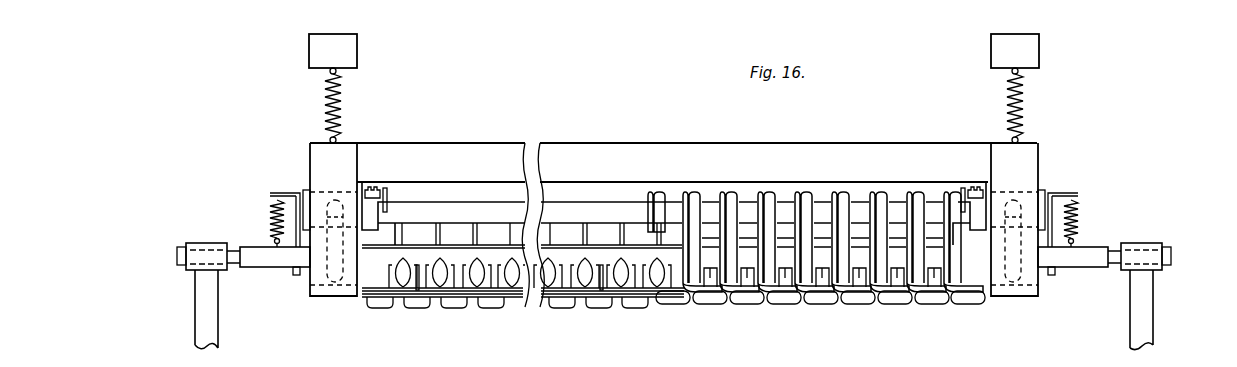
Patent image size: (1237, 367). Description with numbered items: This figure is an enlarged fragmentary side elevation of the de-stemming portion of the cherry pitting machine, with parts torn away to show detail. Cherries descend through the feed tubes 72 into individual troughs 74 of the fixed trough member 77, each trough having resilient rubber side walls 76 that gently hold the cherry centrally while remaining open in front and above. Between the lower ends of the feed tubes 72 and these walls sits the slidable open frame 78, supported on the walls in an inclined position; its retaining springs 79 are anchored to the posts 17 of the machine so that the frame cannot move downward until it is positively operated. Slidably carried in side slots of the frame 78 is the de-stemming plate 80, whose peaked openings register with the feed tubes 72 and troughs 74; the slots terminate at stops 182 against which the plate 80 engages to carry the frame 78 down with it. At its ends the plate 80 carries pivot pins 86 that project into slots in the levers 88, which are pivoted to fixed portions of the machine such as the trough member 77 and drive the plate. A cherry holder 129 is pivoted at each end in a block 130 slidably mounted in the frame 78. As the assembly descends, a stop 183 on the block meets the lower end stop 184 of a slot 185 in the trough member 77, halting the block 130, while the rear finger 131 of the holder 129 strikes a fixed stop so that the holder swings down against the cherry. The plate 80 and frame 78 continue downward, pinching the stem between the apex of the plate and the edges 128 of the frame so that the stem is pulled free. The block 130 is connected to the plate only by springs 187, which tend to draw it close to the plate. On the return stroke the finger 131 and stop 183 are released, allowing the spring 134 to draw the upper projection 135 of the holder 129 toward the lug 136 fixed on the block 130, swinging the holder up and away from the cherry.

The posts 17 is at (348, 51).
The feed tubes 72 is at (762, 192).
The troughs 74 is at (838, 300).
The resilient rubber side walls 76 is at (776, 293).
The trough member 77 is at (511, 282).
The slidable open frame 78 is at (608, 152).
The retaining springs 79 is at (342, 100).
The de-stemming plate 80 is at (272, 258).
The pivot pins 86 is at (177, 258).
The levers 88 is at (212, 330).
The edges 128 is at (478, 289).
The holder 129 is at (482, 205).
The block 130 is at (305, 190).
The rear finger 131 is at (437, 266).
The spring 134 is at (376, 195).
The upper projection 135 is at (388, 200).
The lug 136 is at (364, 192).
The stops 182 is at (350, 292).
The stop 183 is at (1038, 192).
The lower end stop 184 is at (345, 283).
The slot 185 is at (326, 258).
The springs 187 is at (265, 216).